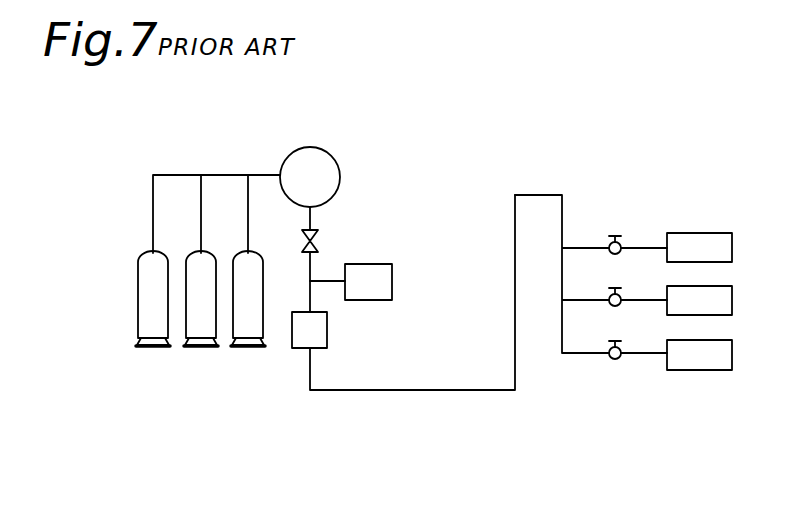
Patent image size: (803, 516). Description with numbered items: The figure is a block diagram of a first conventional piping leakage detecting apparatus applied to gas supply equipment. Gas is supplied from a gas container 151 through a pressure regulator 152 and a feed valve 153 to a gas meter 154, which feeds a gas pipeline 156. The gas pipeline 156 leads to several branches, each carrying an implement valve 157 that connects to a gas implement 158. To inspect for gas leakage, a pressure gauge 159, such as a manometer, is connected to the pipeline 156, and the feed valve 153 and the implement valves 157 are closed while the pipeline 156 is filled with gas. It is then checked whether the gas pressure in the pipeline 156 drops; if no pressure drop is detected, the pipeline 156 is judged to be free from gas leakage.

The gas container 151 is at (201, 344).
The pressure regulator 152 is at (333, 176).
The feed valve 153 is at (316, 238).
The gas meter 154 is at (322, 336).
The gas pipeline 156 is at (378, 392).
The implement valve 157 is at (614, 360).
The gas implement 158 is at (708, 360).
The pressure gauge 159 is at (391, 281).